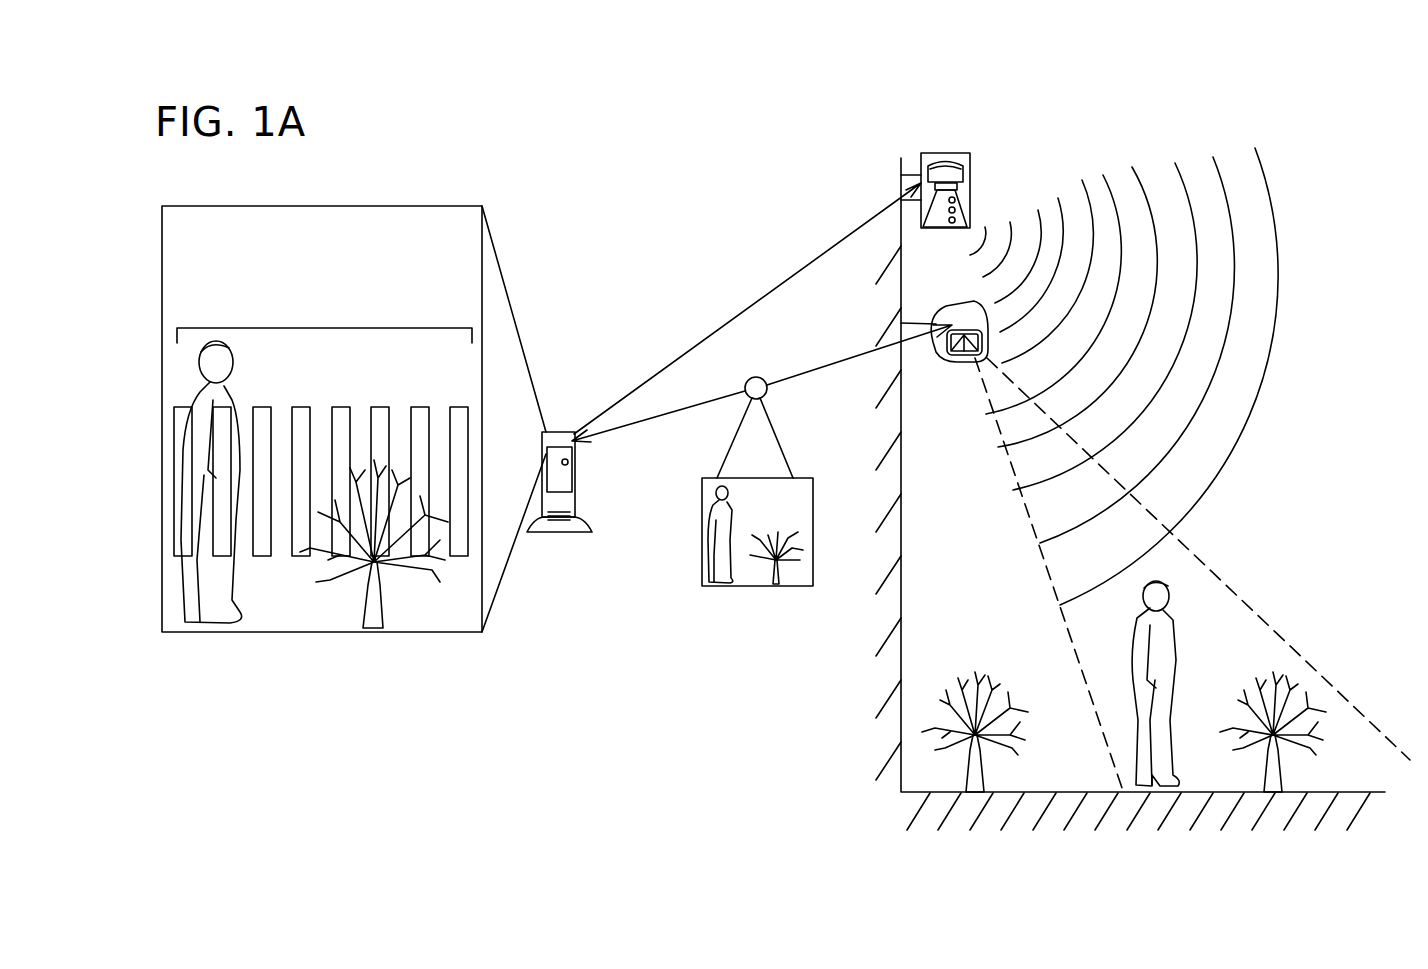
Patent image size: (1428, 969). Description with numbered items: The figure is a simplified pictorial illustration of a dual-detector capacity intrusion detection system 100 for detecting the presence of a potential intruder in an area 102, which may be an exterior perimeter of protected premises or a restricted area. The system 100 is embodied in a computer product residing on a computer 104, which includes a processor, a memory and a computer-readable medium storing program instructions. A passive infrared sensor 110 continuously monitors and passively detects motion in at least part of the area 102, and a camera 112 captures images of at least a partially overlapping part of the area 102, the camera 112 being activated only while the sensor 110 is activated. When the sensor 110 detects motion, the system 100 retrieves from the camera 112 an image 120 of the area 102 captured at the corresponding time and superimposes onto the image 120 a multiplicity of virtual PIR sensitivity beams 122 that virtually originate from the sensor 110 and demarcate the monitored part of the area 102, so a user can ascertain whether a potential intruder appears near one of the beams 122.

The dual-detector capacity intrusion detection system 100 is at (575, 461).
The area 102 is at (1331, 182).
The computer 104 is at (577, 493).
The passive infrared (PIR) sensor 110 is at (943, 153).
The camera 112 is at (950, 363).
The image 120 is at (300, 632).
The virtual PIR sensitivity beams 122 is at (312, 328).